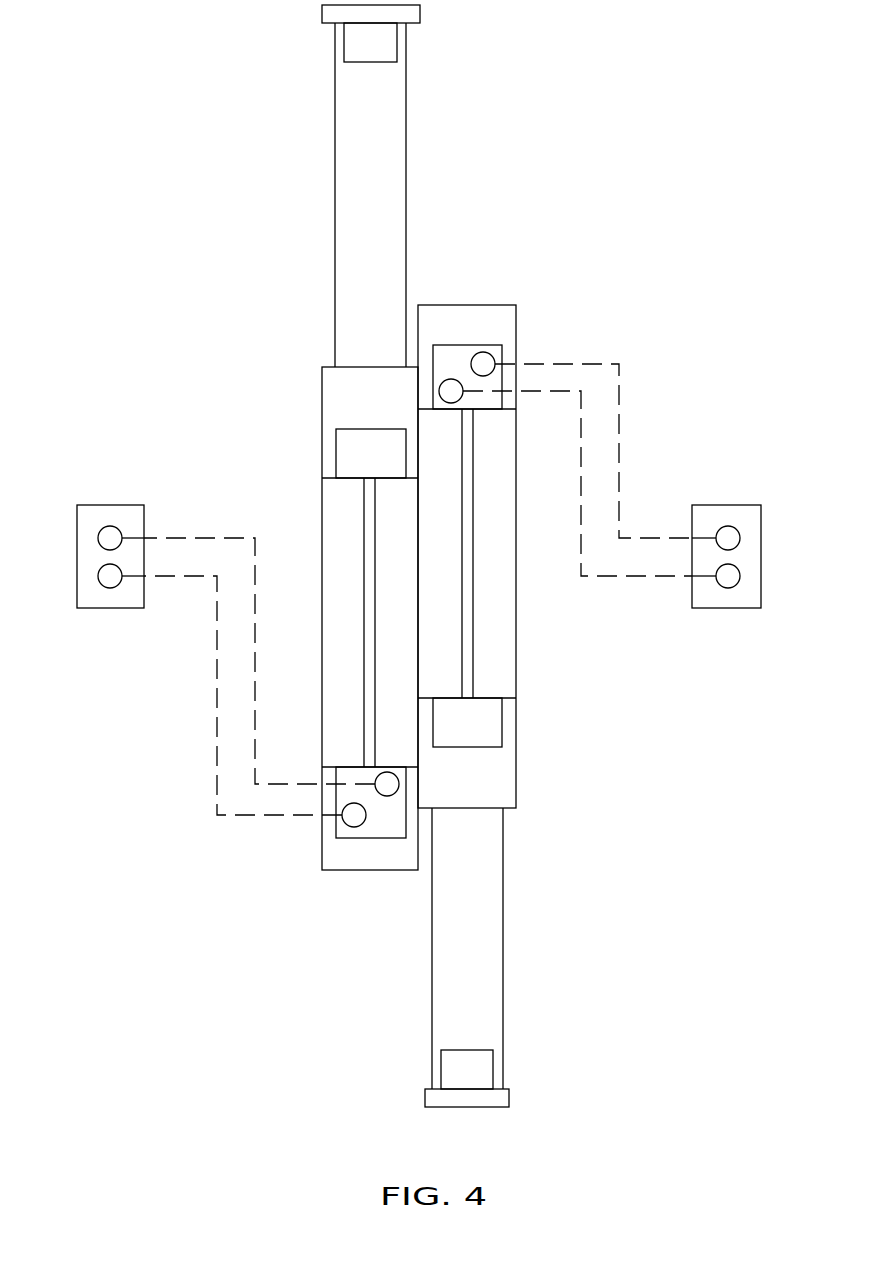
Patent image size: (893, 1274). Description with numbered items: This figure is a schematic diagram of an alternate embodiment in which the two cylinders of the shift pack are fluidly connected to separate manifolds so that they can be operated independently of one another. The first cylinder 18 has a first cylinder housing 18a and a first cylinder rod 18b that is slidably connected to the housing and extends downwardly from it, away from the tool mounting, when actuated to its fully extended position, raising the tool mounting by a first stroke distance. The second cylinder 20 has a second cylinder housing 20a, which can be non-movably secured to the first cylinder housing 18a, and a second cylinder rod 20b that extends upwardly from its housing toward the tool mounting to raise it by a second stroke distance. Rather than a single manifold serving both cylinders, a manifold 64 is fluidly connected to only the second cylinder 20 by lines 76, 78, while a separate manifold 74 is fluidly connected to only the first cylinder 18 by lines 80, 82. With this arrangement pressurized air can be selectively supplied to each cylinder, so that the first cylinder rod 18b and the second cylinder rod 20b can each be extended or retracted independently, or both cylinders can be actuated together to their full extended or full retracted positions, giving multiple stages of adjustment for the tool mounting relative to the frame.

The first cylinder 18 is at (523, 706).
The first cylinder housing 18a is at (495, 776).
The first cylinder rod 18b is at (487, 962).
The second cylinder 20 is at (381, 437).
The second cylinder housing 20a is at (340, 633).
The second cylinder rod 20b is at (383, 123).
The manifold 64 is at (728, 608).
The manifold 74 is at (110, 608).
The line 76 is at (619, 450).
The line 78 is at (581, 484).
The line 80 is at (220, 695).
The line 82 is at (188, 538).